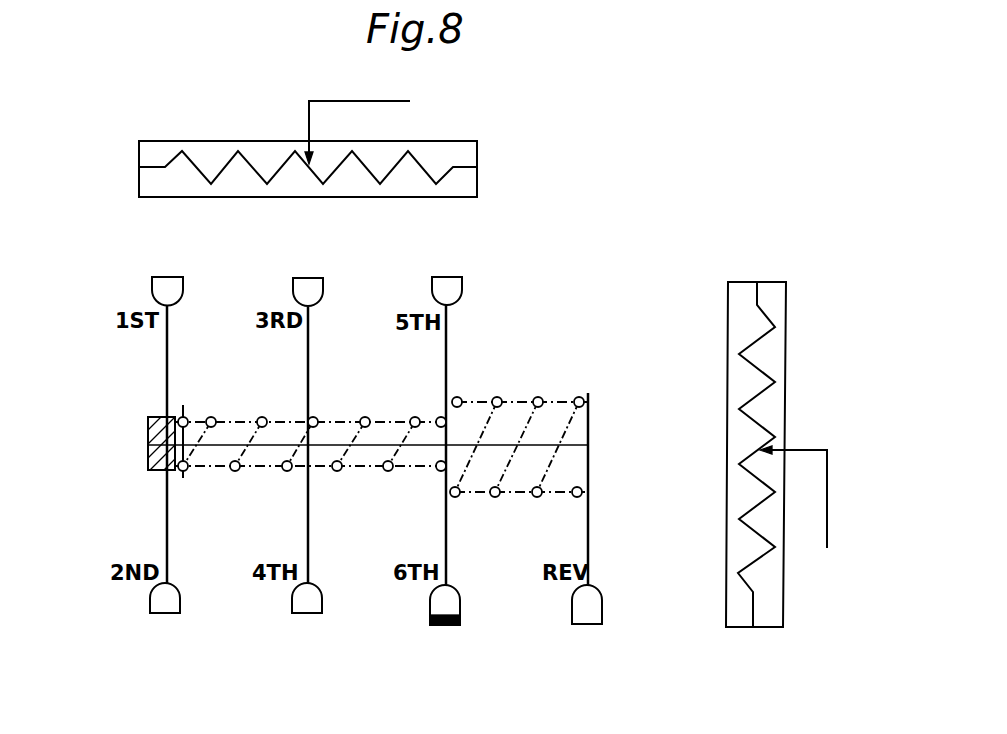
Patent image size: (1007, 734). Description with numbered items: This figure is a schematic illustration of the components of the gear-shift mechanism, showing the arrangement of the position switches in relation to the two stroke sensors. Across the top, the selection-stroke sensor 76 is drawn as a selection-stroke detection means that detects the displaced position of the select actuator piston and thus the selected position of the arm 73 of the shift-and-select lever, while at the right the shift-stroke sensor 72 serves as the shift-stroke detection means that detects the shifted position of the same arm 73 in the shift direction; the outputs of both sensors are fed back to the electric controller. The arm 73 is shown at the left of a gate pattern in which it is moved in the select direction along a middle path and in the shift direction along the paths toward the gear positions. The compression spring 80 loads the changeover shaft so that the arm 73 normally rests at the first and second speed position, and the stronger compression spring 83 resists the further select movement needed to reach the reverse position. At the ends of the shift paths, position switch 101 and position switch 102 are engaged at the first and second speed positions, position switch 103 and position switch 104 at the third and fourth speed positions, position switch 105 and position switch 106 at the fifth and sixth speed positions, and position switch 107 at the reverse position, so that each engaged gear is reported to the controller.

The shift-stroke sensor 72 is at (775, 355).
The arm 73 is at (148, 432).
The selection-stroke sensor 76 is at (455, 152).
The compression spring 80 is at (368, 418).
The compression spring 83 is at (540, 398).
The position switch 101 is at (170, 277).
The position switch 102 is at (165, 613).
The position switch 103 is at (312, 278).
The position switch 104 is at (307, 613).
The position switch 105 is at (452, 277).
The position switch 106 is at (445, 625).
The position switch 107 is at (587, 624).